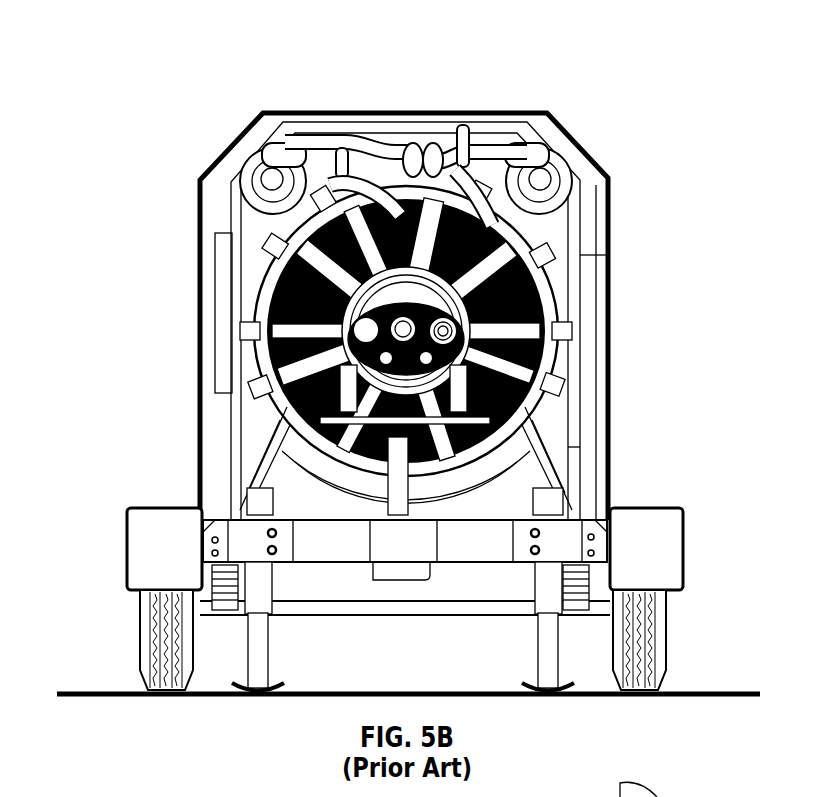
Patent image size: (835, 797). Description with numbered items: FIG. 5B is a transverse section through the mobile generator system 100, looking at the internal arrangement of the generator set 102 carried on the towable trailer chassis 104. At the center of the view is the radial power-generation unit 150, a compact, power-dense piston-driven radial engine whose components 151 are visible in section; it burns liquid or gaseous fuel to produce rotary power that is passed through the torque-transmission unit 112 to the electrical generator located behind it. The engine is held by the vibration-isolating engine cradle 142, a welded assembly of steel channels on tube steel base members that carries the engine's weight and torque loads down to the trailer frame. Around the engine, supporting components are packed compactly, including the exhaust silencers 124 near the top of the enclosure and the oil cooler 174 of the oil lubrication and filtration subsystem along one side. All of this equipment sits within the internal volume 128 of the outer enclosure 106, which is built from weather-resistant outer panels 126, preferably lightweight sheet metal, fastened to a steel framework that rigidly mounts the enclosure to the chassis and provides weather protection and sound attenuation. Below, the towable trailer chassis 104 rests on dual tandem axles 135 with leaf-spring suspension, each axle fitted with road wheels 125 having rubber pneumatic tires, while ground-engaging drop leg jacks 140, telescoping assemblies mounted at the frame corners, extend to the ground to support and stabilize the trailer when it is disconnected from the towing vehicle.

The mobile power generation system 100 is at (690, 98).
The generator set 102 is at (576, 96).
The towable trailer chassis 104 is at (190, 540).
The outer enclosure 106 is at (616, 179).
The torque-transmission unit 112 is at (560, 468).
The exhaust silencers 124 is at (247, 135).
The road wheels 125 is at (670, 637).
The outer panels 126 is at (470, 110).
The internal volume 128 is at (597, 235).
The dual tandem axles 135 is at (470, 620).
The drop leg jacks 140 is at (560, 653).
The engine cradle 142 is at (560, 432).
The radial power-generation unit 150 is at (248, 410).
The cylinders 151 is at (560, 296).
The oil cooler 174 is at (215, 252).